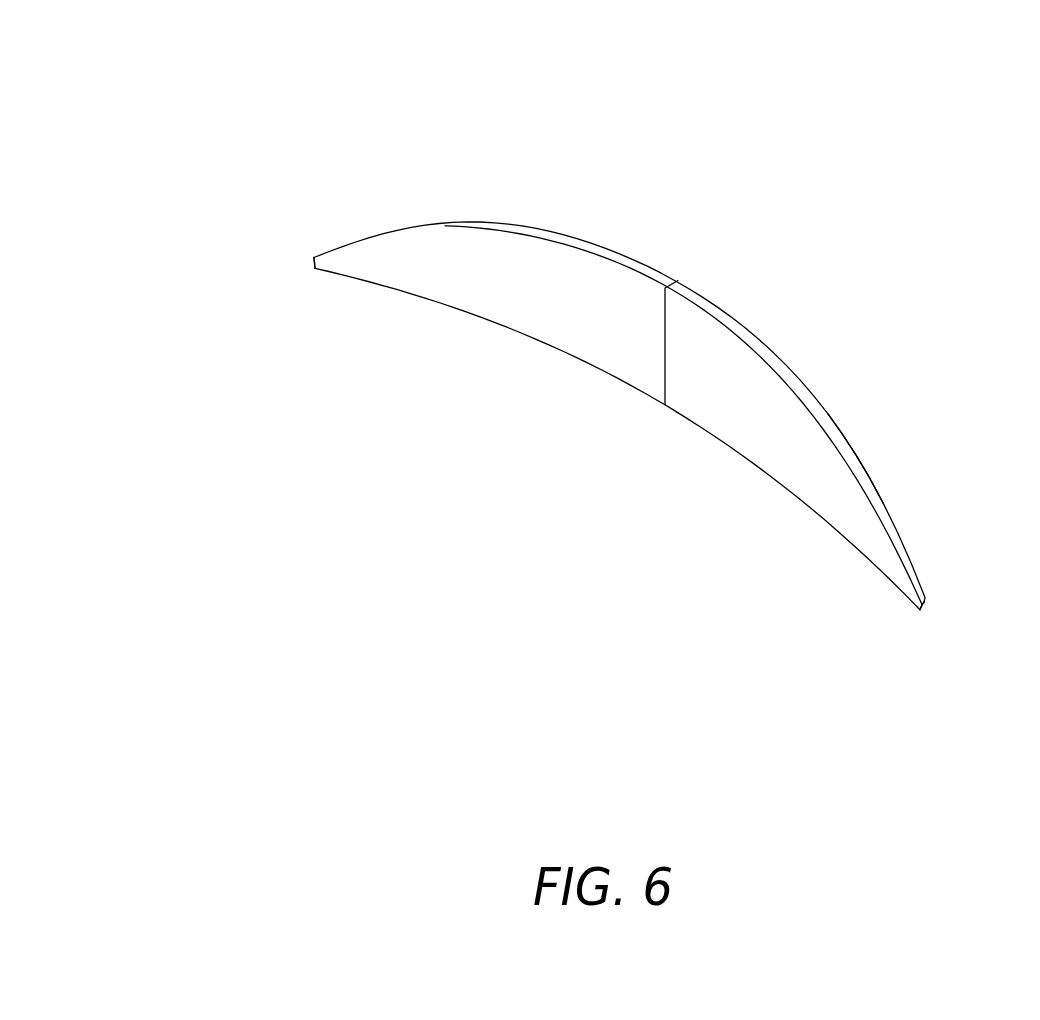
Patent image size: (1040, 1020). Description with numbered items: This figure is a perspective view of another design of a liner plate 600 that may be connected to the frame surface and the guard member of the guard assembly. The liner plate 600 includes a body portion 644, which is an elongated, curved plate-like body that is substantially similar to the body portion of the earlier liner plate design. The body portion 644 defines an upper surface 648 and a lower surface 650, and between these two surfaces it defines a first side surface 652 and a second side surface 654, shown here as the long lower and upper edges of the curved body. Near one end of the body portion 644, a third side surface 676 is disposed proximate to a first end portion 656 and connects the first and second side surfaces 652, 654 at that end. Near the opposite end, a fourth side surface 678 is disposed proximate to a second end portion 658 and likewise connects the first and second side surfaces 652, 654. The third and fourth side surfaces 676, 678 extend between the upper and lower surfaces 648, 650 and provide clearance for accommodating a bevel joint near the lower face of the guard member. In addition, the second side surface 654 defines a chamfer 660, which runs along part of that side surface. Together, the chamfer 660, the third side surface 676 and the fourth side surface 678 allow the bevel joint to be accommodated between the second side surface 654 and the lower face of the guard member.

The liner plate 600 is at (318, 95).
The body portion 644 is at (699, 450).
The upper surface 648 is at (836, 426).
The lower surface 650 is at (625, 343).
The first side surface 652 is at (546, 346).
The second side surface 654 is at (586, 249).
The first end portion 656 is at (936, 627).
The second end portion 658 is at (315, 279).
The chamfer 660 is at (717, 309).
The third side surface 676 is at (928, 608).
The fourth side surface 678 is at (313, 262).